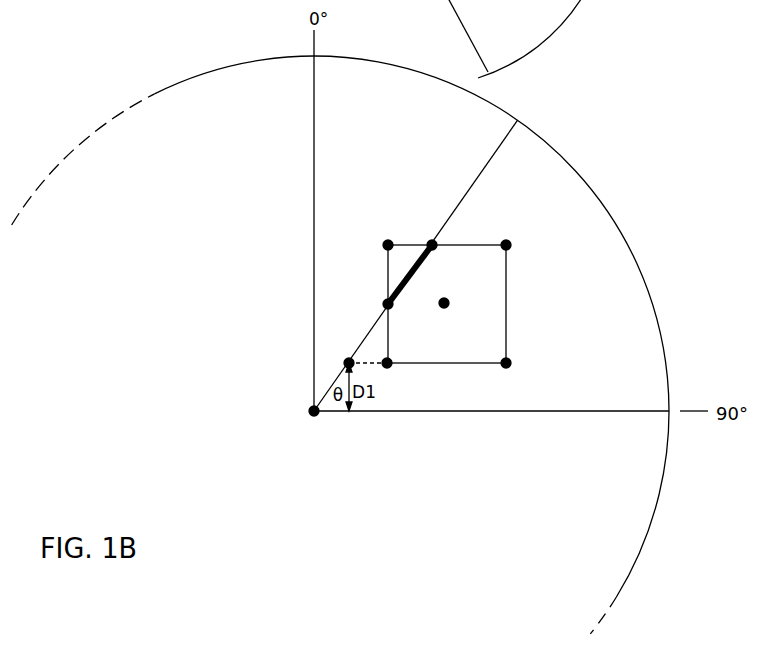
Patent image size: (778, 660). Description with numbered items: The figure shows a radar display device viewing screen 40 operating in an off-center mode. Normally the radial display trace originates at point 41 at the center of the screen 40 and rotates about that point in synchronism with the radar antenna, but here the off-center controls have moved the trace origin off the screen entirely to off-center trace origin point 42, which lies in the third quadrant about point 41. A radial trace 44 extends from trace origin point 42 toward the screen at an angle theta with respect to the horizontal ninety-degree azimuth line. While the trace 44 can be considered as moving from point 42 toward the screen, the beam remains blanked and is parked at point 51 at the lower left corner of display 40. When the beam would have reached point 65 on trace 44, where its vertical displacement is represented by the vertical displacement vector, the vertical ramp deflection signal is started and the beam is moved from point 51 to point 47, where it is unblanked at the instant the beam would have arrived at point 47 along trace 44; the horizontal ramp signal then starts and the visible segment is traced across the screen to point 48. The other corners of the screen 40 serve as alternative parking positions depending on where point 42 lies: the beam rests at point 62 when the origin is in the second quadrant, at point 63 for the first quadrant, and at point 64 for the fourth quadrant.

The display device viewing screen 40 is at (447, 364).
The center point of the screen 41 is at (444, 298).
The off-center trace origin point 42 is at (311, 417).
The radial trace 44 is at (465, 196).
The unblanking point 47 is at (386, 303).
The exit point of line on square 48 is at (431, 241).
The lower left corner point 51 is at (393, 375).
The upper left corner point 62 is at (387, 241).
The upper right corner point 63 is at (508, 241).
The lower right corner point 64 is at (508, 368).
The vertical displacement point 65 is at (348, 360).